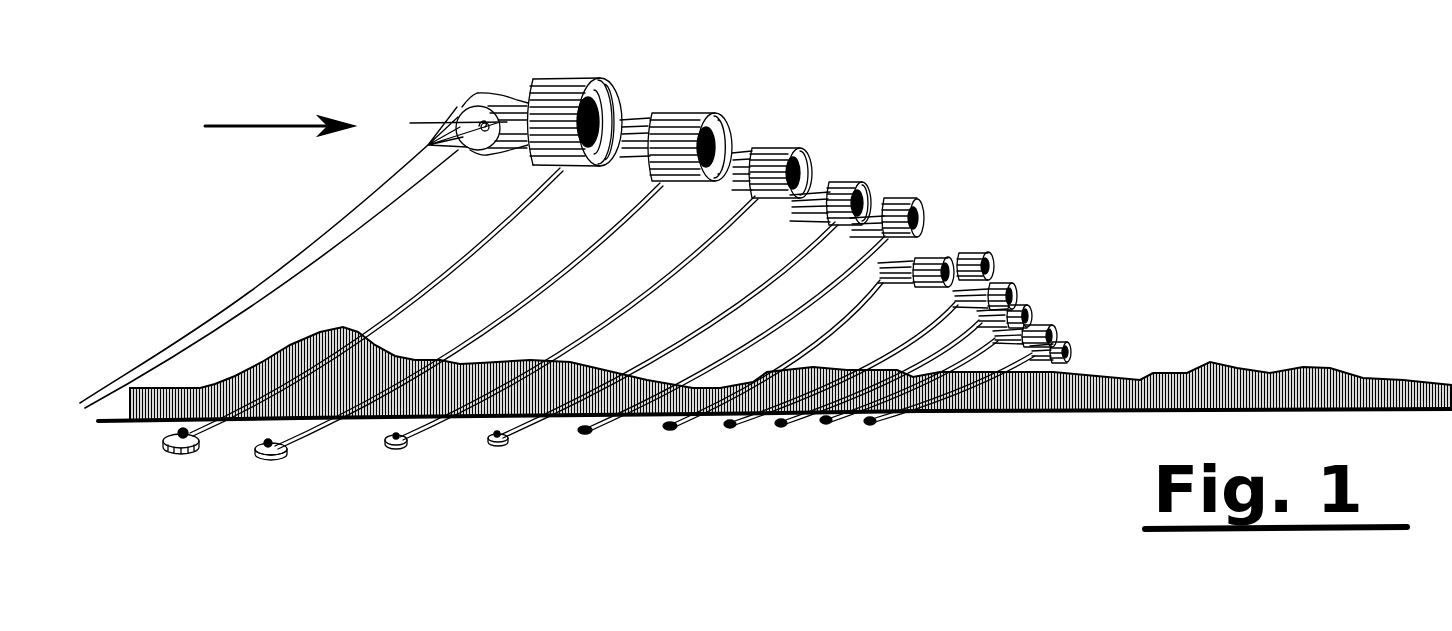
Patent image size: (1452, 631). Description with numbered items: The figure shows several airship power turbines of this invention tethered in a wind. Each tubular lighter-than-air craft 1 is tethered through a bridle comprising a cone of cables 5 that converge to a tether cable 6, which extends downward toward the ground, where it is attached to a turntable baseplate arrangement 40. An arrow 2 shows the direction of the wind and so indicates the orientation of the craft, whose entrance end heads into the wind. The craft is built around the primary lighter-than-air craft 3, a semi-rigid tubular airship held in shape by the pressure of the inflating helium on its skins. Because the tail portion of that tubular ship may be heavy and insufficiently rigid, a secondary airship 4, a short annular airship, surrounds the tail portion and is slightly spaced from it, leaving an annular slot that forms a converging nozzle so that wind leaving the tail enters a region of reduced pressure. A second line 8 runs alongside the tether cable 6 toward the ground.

The tubular lighter-than-air craft 1 is at (510, 190).
The arrow 2 is at (306, 122).
The primary lighter-than-air craft 3 is at (478, 90).
The secondary airship 4 is at (545, 72).
The cone of cables 5 is at (443, 125).
The tether cable 6 is at (320, 240).
The power transmission cable 8 is at (372, 225).
The turntable baseplate arrangement 40 is at (172, 452).